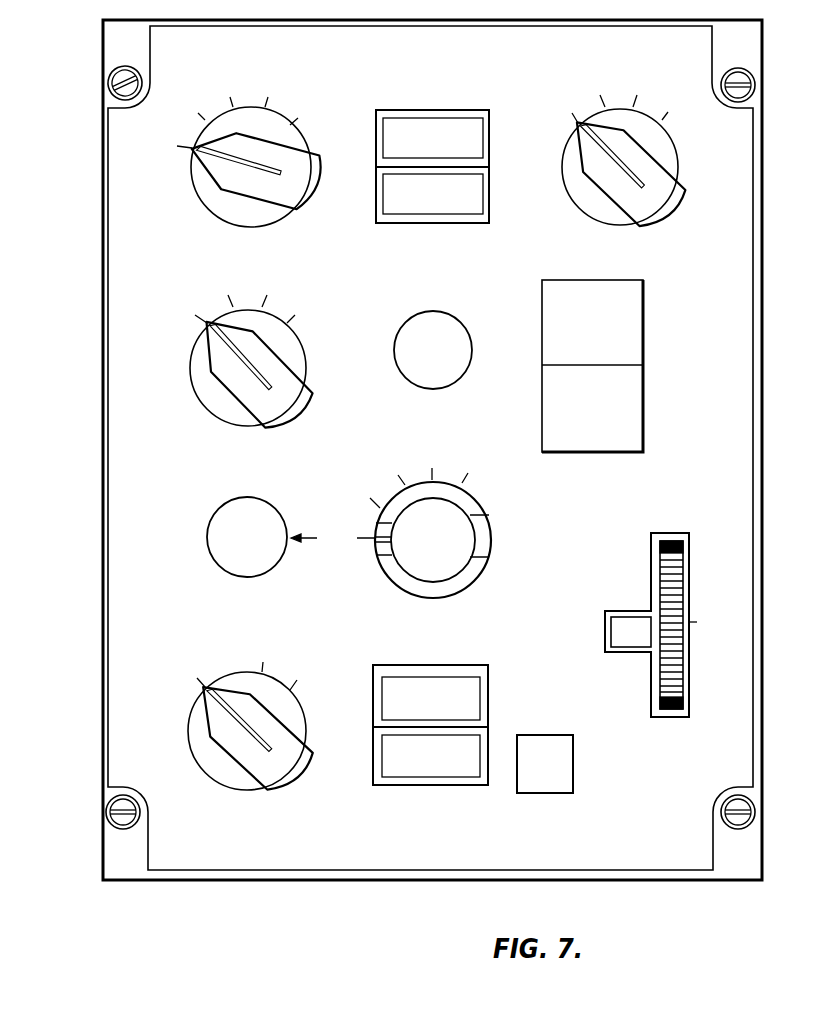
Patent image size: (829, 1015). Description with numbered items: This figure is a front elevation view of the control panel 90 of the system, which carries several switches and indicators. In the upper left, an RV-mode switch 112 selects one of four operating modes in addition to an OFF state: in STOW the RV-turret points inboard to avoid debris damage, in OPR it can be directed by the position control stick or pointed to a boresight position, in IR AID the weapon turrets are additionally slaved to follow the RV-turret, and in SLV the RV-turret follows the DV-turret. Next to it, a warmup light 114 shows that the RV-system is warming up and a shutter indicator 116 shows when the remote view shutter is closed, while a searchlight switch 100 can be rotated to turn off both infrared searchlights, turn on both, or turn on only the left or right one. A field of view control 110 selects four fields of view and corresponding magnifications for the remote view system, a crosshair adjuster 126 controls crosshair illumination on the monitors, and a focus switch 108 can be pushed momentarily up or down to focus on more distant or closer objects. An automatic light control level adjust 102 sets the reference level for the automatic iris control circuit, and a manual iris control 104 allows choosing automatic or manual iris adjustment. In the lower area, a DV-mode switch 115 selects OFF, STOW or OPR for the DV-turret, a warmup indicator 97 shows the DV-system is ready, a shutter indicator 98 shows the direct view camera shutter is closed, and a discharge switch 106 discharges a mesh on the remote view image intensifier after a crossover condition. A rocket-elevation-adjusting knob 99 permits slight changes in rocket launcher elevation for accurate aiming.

The control panel 90 is at (103, 225).
The warmup indicator 97 is at (463, 676).
The shutter indicator 98 is at (394, 778).
The rocket-elevation-adjusting knob 99 is at (660, 576).
The searchlight switch 100 is at (678, 166).
The automatic light control level adjust 102 is at (212, 520).
The manual iris control 104 is at (488, 528).
The discharge switch 106 is at (570, 780).
The focus switch 108 is at (628, 352).
The field of view control 110 is at (213, 376).
The RV-mode switch 112 is at (225, 187).
The warmup light 114 is at (490, 144).
The DV-mode switch 115 is at (212, 738).
The shutter indicator 116 is at (490, 188).
The crosshair adjuster 126 is at (470, 338).